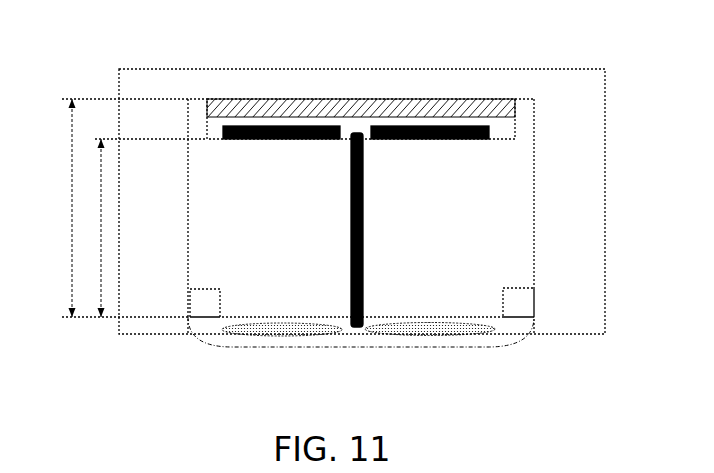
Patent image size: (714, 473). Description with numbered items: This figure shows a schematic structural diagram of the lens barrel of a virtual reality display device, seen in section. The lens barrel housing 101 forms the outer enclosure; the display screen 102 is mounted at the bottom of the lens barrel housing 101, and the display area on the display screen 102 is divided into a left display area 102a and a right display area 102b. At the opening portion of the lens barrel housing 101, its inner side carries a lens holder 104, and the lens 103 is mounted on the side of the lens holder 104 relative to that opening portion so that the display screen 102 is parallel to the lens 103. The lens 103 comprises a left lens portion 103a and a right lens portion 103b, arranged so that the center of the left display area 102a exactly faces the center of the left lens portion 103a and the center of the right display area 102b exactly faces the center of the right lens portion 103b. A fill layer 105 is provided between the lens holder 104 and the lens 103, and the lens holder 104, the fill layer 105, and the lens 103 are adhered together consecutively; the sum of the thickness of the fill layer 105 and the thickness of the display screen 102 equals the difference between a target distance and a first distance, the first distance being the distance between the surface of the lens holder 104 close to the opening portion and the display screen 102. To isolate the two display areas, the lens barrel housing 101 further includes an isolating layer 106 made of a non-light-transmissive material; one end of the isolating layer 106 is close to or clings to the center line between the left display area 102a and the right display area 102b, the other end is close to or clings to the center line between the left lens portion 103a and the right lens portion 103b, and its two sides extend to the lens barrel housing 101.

The lens barrel housing 101 is at (385, 80).
The display screen 102 is at (512, 133).
The left display area 102a is at (280, 139).
The right display area 102b is at (438, 139).
The lens 103 is at (355, 338).
The left lens portion 103a is at (280, 339).
The right lens portion 103b is at (438, 327).
The lens holder 104 is at (208, 297).
The fill layer 105 is at (310, 99).
The isolating layer 106 is at (363, 268).